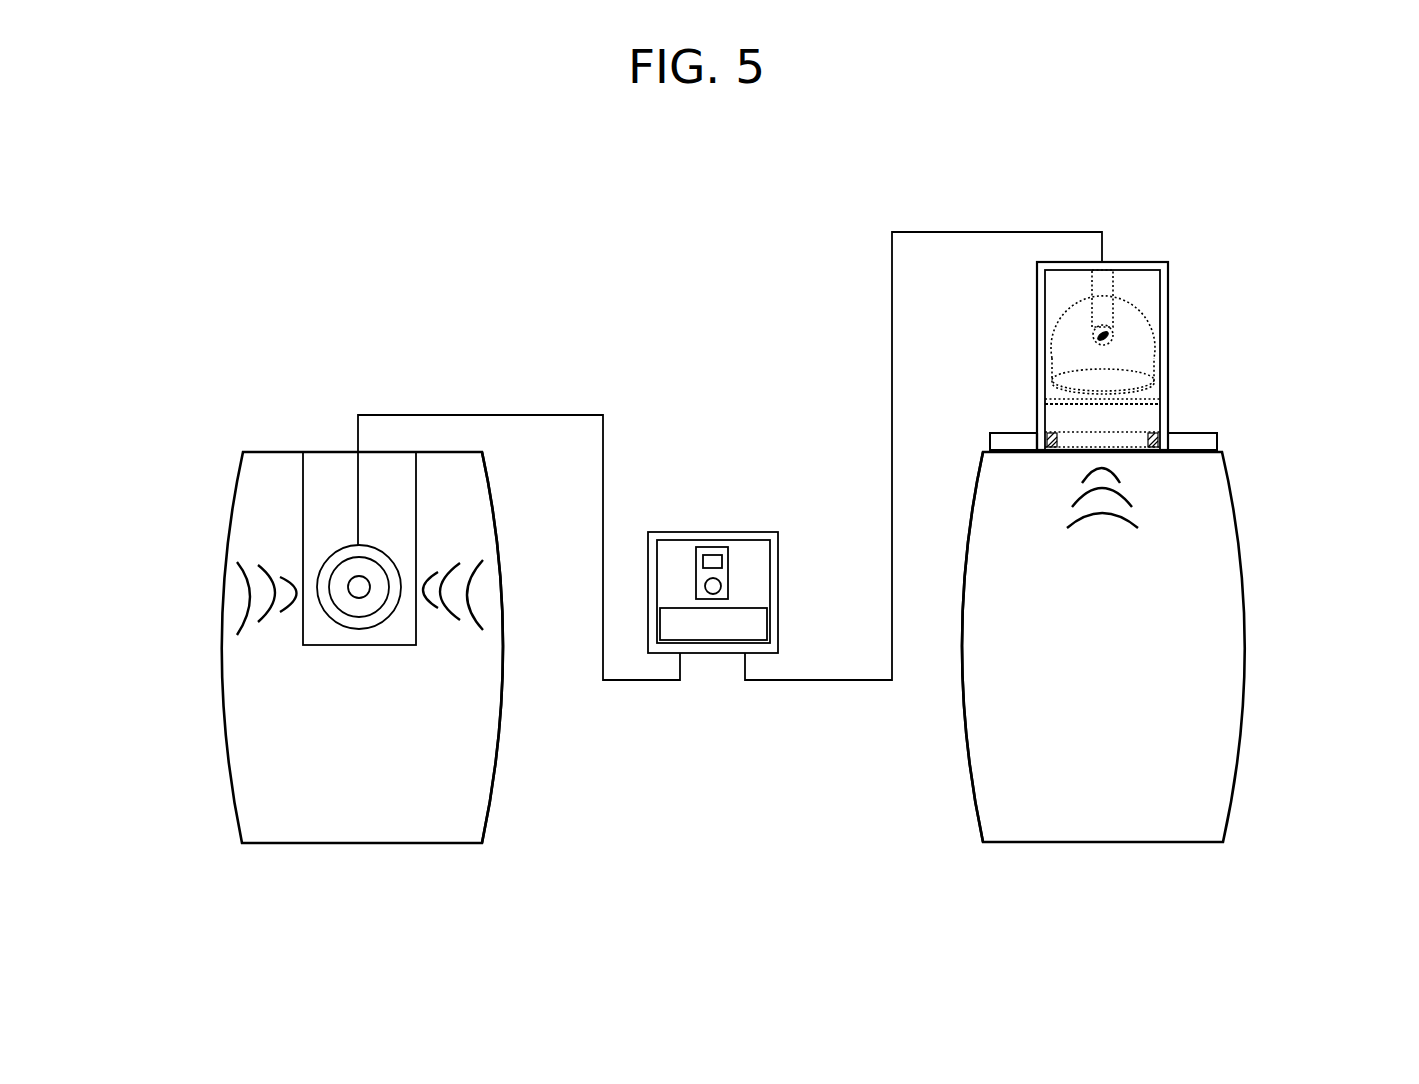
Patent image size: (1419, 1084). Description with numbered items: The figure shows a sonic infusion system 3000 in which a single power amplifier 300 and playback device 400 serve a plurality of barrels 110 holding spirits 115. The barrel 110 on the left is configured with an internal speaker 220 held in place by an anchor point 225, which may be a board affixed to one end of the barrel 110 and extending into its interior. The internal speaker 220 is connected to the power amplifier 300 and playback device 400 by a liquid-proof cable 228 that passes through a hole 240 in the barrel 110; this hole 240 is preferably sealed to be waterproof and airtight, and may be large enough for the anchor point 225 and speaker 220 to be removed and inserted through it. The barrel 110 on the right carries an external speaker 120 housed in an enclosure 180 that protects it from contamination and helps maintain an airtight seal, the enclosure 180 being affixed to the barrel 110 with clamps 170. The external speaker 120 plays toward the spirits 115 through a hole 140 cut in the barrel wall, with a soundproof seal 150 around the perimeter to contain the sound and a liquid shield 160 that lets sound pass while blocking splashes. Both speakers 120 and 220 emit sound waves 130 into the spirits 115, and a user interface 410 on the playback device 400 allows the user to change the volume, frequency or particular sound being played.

The sonic infusion system 3000 is at (731, 169).
The barrel 110 is at (288, 847).
The spirits 115 is at (453, 760).
The external speaker 120 is at (1128, 357).
The sound waves 130 is at (457, 645).
The hole 140 is at (1105, 448).
The soundproof seal 150 is at (1043, 432).
The liquid shield 160 is at (1138, 399).
The clamps 170 is at (1222, 440).
The enclosure 180 is at (1033, 317).
The internal speaker 220 is at (318, 557).
The anchor point 225 is at (317, 508).
The liquid-proof cable 228 is at (352, 477).
The hole 240 is at (351, 446).
The power amplifier 300 is at (703, 625).
The playback device 400 is at (738, 553).
The user interface 410 is at (723, 583).